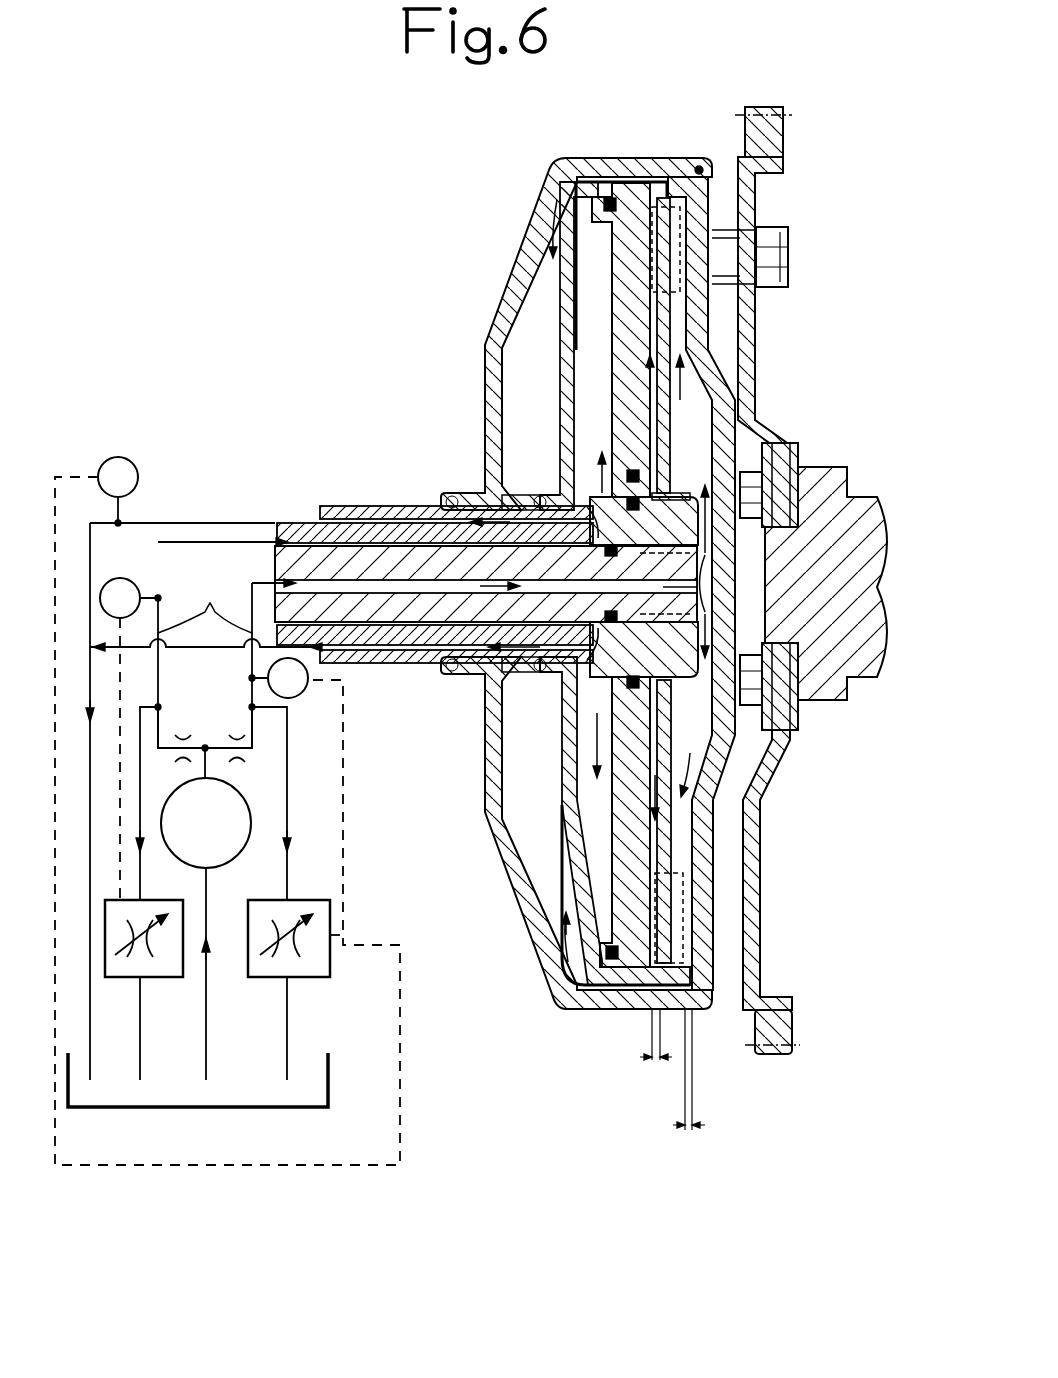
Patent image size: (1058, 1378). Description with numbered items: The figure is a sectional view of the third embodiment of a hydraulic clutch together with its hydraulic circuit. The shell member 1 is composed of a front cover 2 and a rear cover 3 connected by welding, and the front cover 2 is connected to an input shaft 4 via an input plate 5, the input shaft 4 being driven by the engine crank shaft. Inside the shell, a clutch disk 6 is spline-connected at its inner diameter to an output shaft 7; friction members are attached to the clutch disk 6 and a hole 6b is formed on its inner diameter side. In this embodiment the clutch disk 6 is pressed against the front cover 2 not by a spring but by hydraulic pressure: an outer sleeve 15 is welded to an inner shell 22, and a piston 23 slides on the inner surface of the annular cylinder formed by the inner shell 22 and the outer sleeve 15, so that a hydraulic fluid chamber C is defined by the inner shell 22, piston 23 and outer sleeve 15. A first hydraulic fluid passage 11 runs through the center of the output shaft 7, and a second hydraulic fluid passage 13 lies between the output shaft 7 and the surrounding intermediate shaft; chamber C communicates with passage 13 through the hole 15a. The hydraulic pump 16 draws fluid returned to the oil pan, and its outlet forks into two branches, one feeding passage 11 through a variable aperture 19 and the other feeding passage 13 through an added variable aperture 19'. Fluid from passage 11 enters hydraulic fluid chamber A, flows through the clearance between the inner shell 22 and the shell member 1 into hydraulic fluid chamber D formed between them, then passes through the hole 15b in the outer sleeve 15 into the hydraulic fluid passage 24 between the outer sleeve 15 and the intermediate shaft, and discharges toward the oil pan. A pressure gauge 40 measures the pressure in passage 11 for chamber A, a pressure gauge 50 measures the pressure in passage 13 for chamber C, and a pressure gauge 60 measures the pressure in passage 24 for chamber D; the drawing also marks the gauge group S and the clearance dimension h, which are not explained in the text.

The shell member 1 is at (621, 148).
The front cover 2 is at (697, 337).
The rear cover 3 is at (525, 262).
The input shaft 4 is at (815, 702).
The input plate 5 is at (768, 880).
The clutch disk 6 is at (695, 435).
The hole 6b is at (680, 390).
The output shaft 7 is at (490, 662).
The first hydraulic fluid passage 11 is at (430, 590).
The second hydraulic fluid passage 13 is at (378, 540).
The outer sleeve 15 is at (350, 515).
The hole 15a is at (562, 470).
The hole 15b is at (510, 498).
The hydraulic pump 16 is at (243, 808).
The variable aperture 19 is at (309, 990).
The variable aperture 19' is at (155, 990).
The inner shell 22 is at (577, 218).
The piston 23 is at (623, 287).
The hydraulic fluid passage 24 is at (330, 507).
The pressure gauge 40 is at (297, 698).
The pressure gauge 50 is at (127, 580).
The pressure gauge 60 is at (120, 458).
The hydraulic fluid chamber A is at (700, 452).
The hydraulic fluid chamber C is at (588, 418).
The hydraulic fluid chamber D is at (528, 372).
The switching valve unit S is at (206, 613).
The gap dimension h is at (672, 1087).